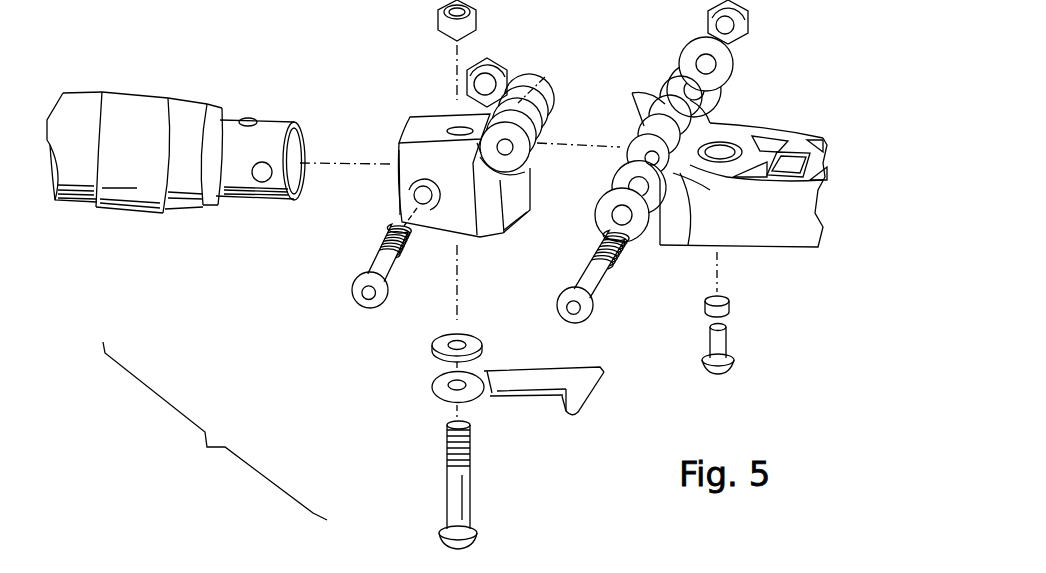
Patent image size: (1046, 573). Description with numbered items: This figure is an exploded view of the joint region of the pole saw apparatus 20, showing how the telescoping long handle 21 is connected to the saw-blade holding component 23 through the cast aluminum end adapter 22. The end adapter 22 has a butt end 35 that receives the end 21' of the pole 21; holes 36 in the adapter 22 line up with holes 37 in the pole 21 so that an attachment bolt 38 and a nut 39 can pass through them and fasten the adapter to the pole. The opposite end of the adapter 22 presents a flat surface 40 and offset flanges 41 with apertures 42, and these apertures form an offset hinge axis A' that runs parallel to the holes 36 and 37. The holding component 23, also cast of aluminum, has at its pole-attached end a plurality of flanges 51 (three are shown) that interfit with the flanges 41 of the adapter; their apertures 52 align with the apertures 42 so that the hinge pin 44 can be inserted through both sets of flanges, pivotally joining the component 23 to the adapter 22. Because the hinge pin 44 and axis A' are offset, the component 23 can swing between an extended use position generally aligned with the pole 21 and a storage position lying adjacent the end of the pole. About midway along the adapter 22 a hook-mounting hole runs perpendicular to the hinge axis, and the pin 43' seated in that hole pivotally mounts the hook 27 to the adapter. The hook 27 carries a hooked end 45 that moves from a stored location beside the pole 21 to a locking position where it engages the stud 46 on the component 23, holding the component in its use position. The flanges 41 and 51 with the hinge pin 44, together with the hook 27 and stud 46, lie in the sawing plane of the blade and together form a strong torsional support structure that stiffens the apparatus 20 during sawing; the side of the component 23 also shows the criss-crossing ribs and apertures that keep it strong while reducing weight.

The pole saw apparatus 20 is at (215, 431).
The long handle 21 is at (145, 116).
The end of the pole 21' is at (264, 134).
The end adapter 22 is at (401, 118).
The saw-blade holding component 23 is at (778, 132).
The hook 27 is at (528, 400).
The butt end 35 is at (398, 152).
The holes 36 is at (414, 193).
The holes 37 is at (263, 182).
The attachment bolt 38 is at (372, 265).
The nut 39 is at (492, 67).
The flat surface 40 is at (520, 223).
The offset flanges 41 is at (535, 103).
The apertures 42 is at (510, 157).
The pin 43' is at (432, 485).
The hinge pin 44 is at (594, 282).
The hooked end 45 is at (578, 412).
The stud 46 is at (730, 348).
The flanges 51 is at (640, 112).
The apertures 52 is at (689, 200).
The pivot axis A' is at (533, 93).